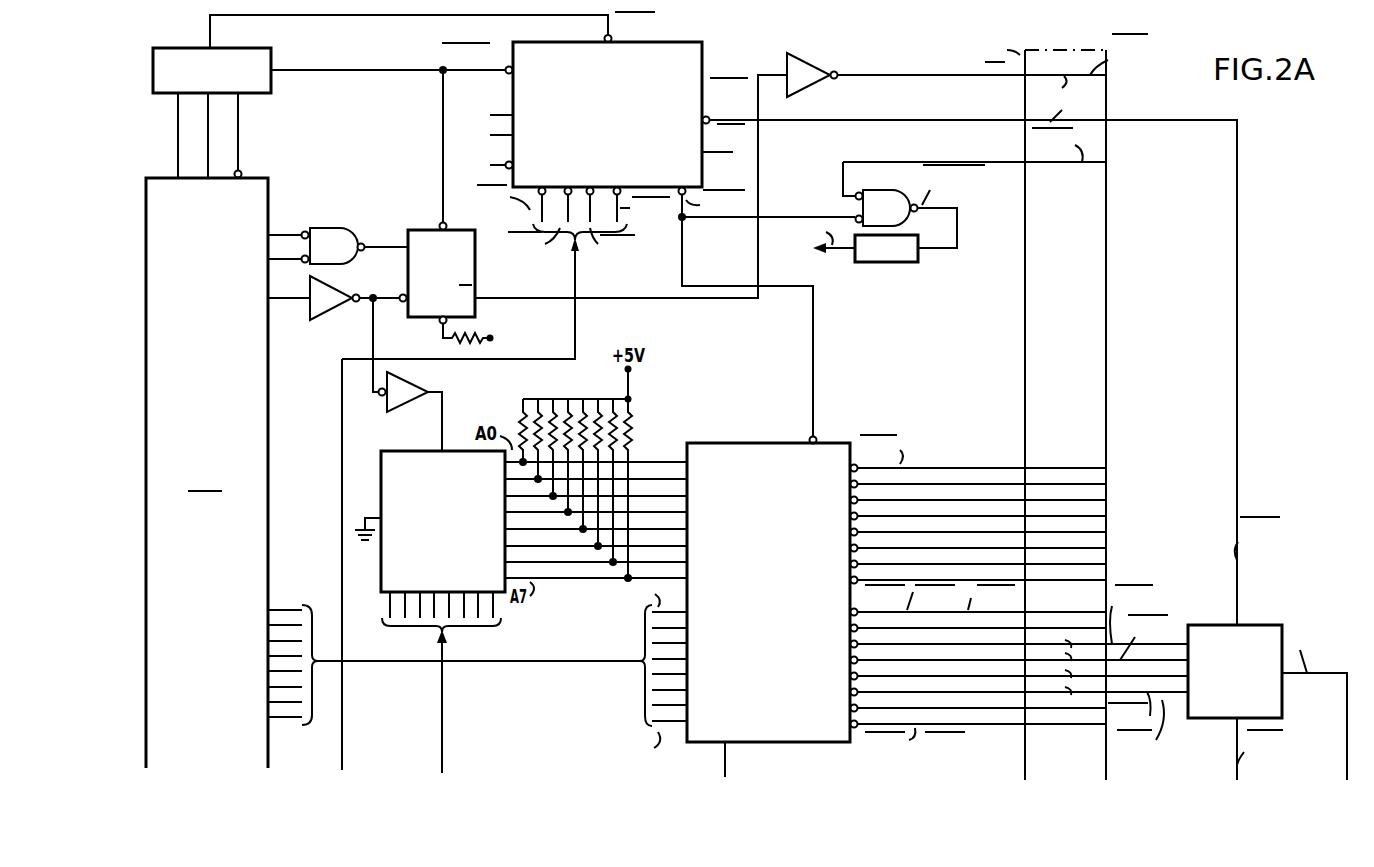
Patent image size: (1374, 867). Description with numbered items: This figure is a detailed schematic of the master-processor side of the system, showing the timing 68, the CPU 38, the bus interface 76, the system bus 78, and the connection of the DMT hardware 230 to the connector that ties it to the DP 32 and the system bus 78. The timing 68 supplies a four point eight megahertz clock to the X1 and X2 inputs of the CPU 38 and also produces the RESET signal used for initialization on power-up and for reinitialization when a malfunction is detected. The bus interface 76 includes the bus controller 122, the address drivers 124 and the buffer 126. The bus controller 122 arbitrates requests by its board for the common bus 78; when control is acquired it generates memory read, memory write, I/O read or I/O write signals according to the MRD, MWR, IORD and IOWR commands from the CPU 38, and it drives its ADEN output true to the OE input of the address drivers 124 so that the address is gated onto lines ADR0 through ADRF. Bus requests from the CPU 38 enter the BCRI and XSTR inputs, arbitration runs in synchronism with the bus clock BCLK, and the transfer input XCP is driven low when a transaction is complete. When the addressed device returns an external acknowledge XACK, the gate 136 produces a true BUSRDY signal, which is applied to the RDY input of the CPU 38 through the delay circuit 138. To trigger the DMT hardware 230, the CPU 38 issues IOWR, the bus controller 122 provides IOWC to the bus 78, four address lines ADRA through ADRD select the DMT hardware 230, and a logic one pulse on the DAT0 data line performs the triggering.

The timing 68 is at (256, 50).
The CPU 38 is at (260, 178).
The DP 32 is at (333, 195).
The bus controller 122 is at (695, 50).
The system bus 78 is at (1048, 46).
The bus interface 76 is at (935, 222).
The gate 136 is at (889, 192).
The delay circuit 138 is at (905, 264).
The buffer 126 is at (402, 451).
The address drivers 124 is at (738, 443).
The DMT hardware 230 is at (1206, 625).